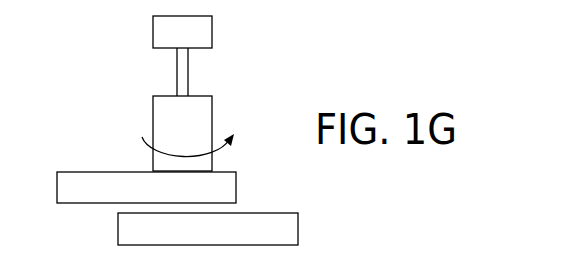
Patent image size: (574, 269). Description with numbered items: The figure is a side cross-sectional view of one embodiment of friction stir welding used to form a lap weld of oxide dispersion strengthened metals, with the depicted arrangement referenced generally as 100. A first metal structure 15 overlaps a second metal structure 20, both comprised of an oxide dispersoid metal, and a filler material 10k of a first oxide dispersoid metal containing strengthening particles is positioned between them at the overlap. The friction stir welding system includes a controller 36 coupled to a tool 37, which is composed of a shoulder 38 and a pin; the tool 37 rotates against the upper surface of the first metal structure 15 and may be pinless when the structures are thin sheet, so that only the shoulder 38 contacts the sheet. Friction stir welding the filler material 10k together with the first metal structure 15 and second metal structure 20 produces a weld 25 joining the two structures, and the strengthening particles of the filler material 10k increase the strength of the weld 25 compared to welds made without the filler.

The system 100 is at (106, 12).
The controller 36 is at (192, 43).
The tool 37 is at (214, 84).
The shoulder 38 is at (192, 140).
The first metal structure 15 is at (123, 197).
The second metal structure 20 is at (229, 239).
The filler material 10k is at (182, 208).
The weld 25 is at (497, 260).